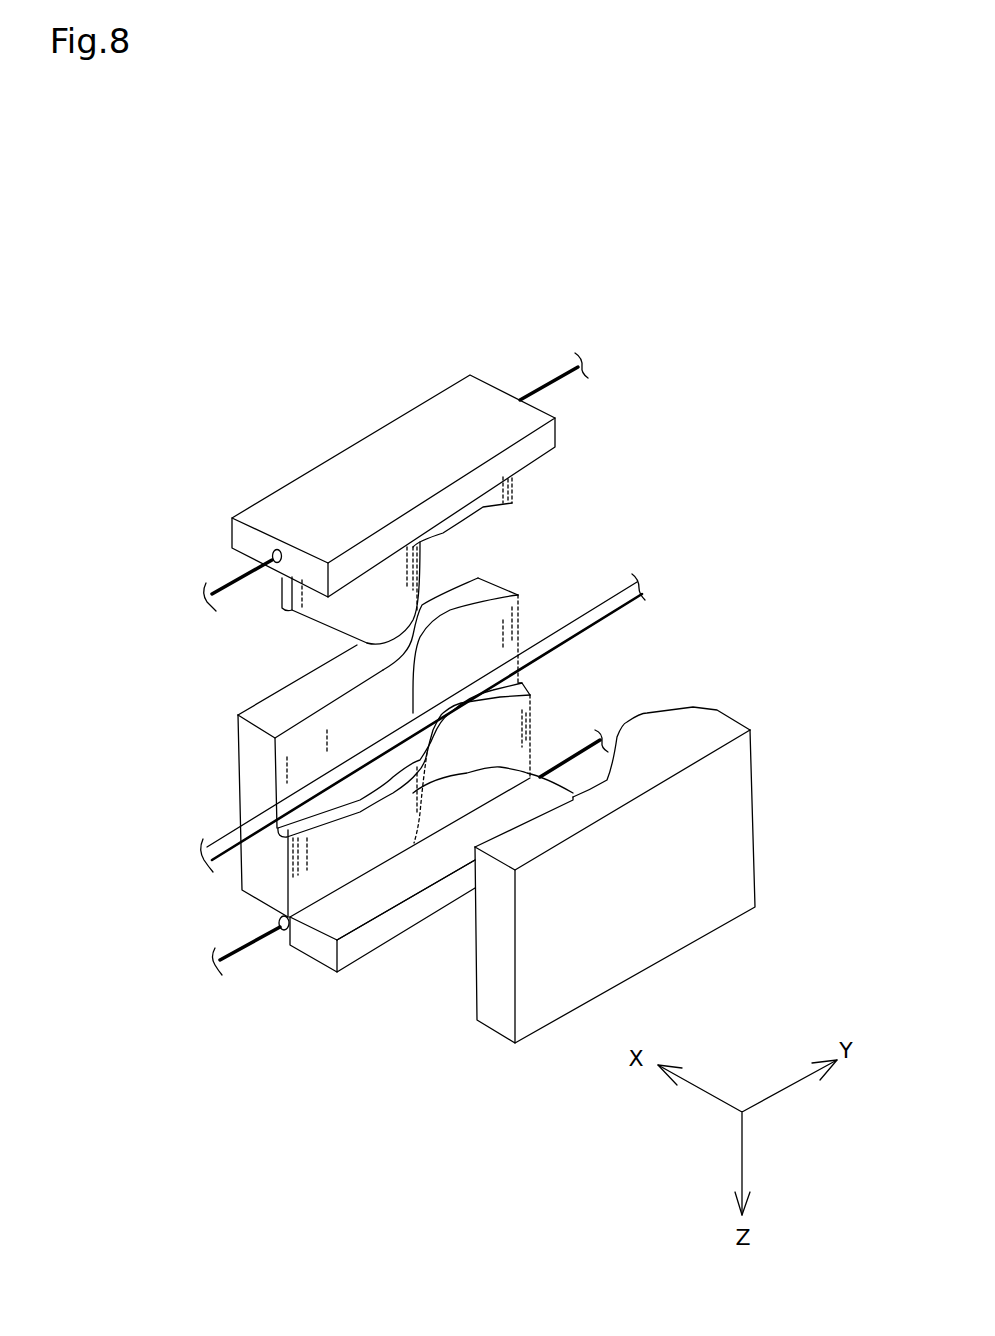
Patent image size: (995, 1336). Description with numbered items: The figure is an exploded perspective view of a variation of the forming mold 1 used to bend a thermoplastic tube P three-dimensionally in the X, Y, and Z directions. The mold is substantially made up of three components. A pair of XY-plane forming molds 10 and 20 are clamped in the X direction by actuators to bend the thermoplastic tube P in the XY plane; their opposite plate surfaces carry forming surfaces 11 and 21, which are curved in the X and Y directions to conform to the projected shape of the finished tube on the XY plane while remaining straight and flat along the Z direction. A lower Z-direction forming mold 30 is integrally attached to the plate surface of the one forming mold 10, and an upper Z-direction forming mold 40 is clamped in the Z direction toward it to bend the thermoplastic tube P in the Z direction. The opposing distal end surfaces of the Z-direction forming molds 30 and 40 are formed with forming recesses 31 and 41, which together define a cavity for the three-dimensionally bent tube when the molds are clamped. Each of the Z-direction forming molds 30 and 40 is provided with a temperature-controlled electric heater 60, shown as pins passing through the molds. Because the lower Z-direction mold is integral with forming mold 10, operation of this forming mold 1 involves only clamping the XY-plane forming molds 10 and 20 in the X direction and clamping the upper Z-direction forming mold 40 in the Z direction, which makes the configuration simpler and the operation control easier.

The forming mold 1 is at (263, 688).
The XY-plane forming mold 10 is at (351, 747).
The forming surface 11 is at (357, 735).
The XY-plane forming mold 20 is at (623, 845).
The forming surface 21 is at (630, 730).
The lower Z-direction forming mold 30 is at (297, 945).
The forming recess 31 is at (362, 797).
The upper Z-direction forming mold 40 is at (398, 453).
The forming recess 41 is at (485, 508).
The temperature-controlled electric heater 60 is at (277, 553).
The thermoplastic tube P is at (257, 818).